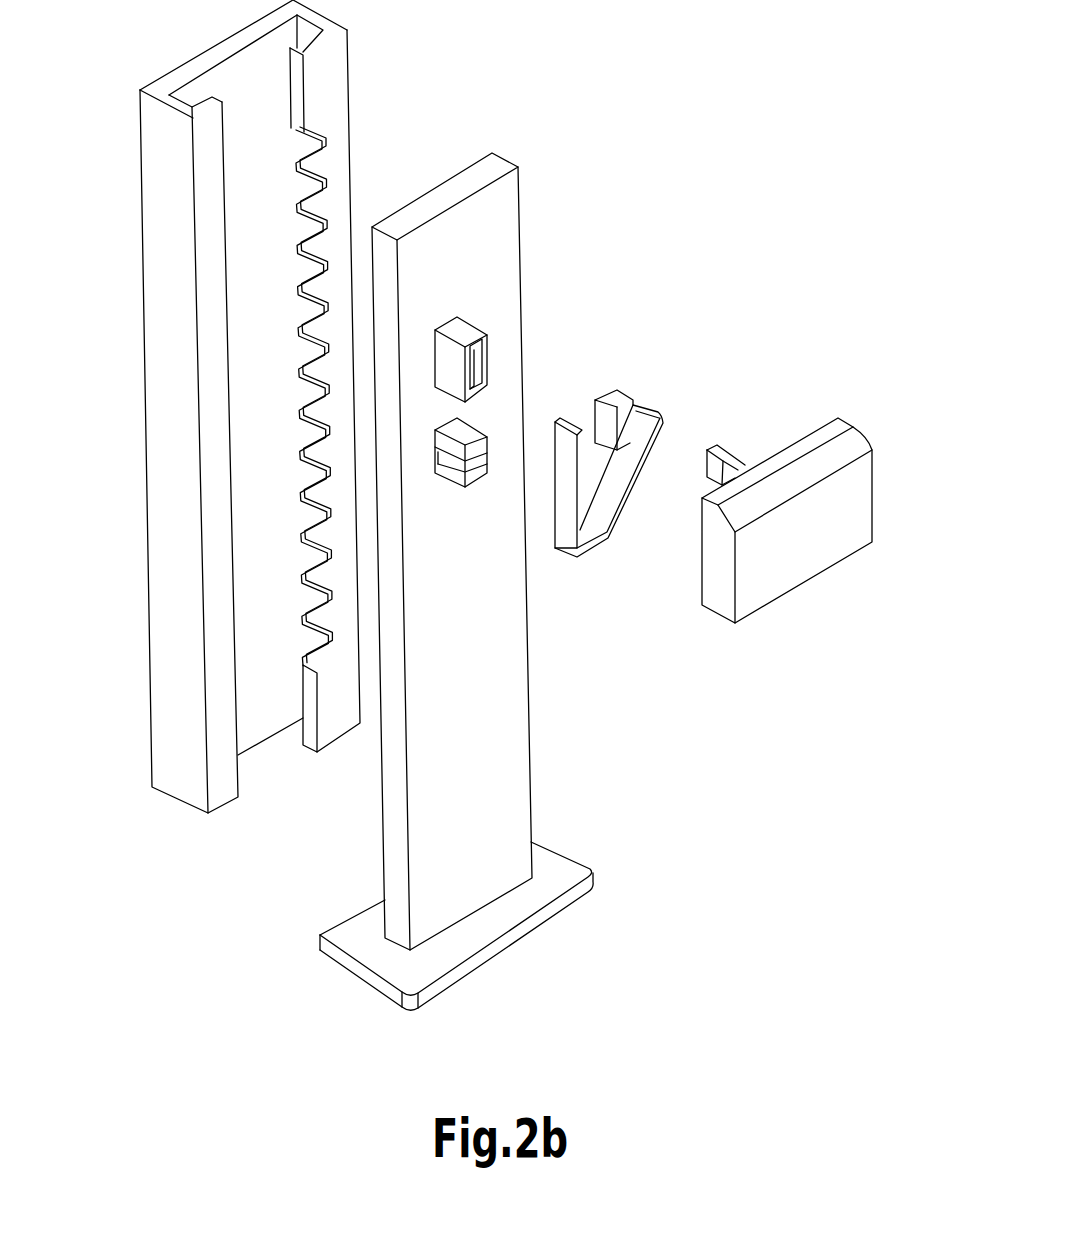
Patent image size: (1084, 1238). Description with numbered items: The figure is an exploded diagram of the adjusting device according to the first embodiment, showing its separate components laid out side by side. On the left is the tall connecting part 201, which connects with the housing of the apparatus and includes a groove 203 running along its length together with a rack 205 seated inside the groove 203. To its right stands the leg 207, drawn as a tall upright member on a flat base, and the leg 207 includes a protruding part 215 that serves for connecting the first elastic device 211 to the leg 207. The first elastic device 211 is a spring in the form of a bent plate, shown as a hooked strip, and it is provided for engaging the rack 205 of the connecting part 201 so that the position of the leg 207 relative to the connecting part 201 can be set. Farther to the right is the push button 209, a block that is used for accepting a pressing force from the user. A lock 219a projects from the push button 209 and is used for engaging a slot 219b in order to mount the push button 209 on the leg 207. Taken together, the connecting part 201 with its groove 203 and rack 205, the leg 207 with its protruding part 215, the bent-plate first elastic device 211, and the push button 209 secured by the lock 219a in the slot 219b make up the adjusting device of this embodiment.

The connecting part 201 is at (165, 237).
The groove 203 is at (213, 82).
The rack 205 is at (332, 177).
The leg 207 is at (490, 240).
The push button 209 is at (852, 498).
The first elastic device 211 is at (627, 405).
The protruding part 215 is at (457, 445).
The lock 219a is at (728, 447).
The slot 219b is at (470, 333).